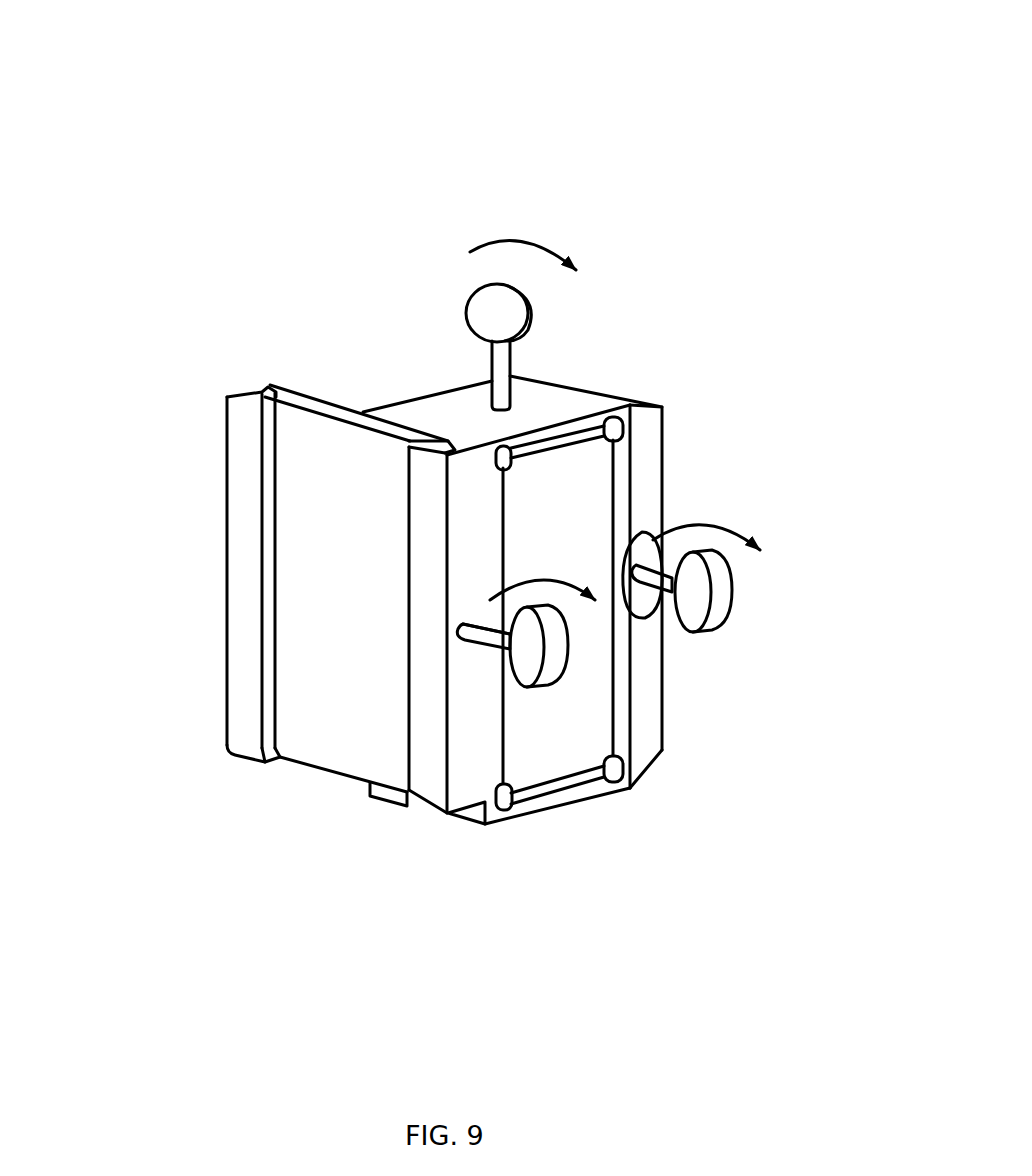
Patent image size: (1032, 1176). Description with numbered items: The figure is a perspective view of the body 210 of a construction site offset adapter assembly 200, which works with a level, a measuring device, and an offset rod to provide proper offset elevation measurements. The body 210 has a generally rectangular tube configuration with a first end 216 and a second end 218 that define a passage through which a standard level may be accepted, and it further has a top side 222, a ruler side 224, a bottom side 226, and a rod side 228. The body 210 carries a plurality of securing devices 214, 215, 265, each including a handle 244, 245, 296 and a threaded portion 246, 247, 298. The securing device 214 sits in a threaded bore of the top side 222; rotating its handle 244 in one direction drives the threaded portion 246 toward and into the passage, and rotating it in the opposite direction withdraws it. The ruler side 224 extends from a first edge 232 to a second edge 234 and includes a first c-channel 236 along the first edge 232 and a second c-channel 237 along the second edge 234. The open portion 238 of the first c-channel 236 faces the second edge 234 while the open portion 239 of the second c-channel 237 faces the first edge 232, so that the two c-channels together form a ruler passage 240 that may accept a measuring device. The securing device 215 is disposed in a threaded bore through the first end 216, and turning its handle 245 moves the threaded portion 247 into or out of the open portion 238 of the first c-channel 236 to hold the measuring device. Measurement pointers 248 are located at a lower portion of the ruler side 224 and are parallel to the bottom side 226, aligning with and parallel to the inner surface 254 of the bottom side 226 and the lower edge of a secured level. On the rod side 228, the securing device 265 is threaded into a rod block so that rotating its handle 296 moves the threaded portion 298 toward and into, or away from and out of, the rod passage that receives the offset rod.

The construction site offset adapter assembly 200 is at (618, 138).
The body 210 is at (344, 228).
The securing device 214 is at (587, 260).
The securing device 215 is at (596, 646).
The first end 216 is at (633, 485).
The second end 218 is at (456, 386).
The top side 222 is at (540, 404).
The ruler side 224 is at (313, 458).
The bottom side 226 is at (532, 836).
The rod side 228 is at (694, 715).
The first edge 232 is at (440, 660).
The second edge 234 is at (225, 552).
The first c-channel 236 is at (430, 742).
The second c-channel 237 is at (240, 729).
The open portion 238 is at (421, 433).
The open portion 239 is at (251, 386).
The ruler passage 240 is at (323, 528).
The handle 244 is at (497, 315).
The handle 245 is at (530, 652).
The threaded portion 246 is at (512, 371).
The threaded portion 247 is at (496, 638).
The measurement pointers 248 is at (275, 768).
The inner surface 254 is at (540, 766).
The securing device 265 is at (797, 582).
The handle 296 is at (700, 587).
The threaded portion 298 is at (651, 578).